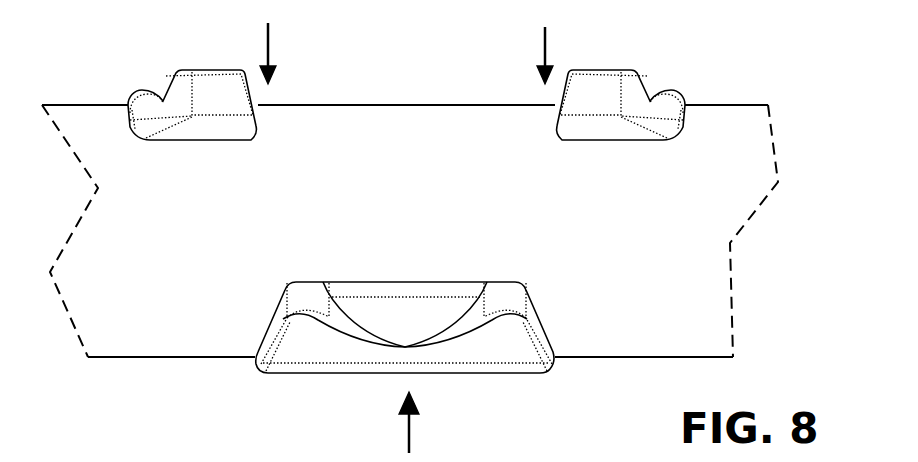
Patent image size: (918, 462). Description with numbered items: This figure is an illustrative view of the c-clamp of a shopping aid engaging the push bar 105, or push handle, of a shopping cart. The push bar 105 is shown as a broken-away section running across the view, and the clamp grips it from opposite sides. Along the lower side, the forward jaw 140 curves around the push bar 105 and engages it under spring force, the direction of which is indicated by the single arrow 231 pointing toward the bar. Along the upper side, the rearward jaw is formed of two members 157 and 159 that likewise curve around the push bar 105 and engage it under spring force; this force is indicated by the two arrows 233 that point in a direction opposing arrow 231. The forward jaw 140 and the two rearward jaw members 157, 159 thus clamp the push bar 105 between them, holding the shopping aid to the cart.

The push bar 105 is at (707, 318).
The member of the rearward jaw 157 is at (180, 95).
The member of the rearward jaw 159 is at (645, 112).
The forward jaw 140 is at (477, 357).
The arrows 233 is at (270, 33).
The arrow 231 is at (407, 438).